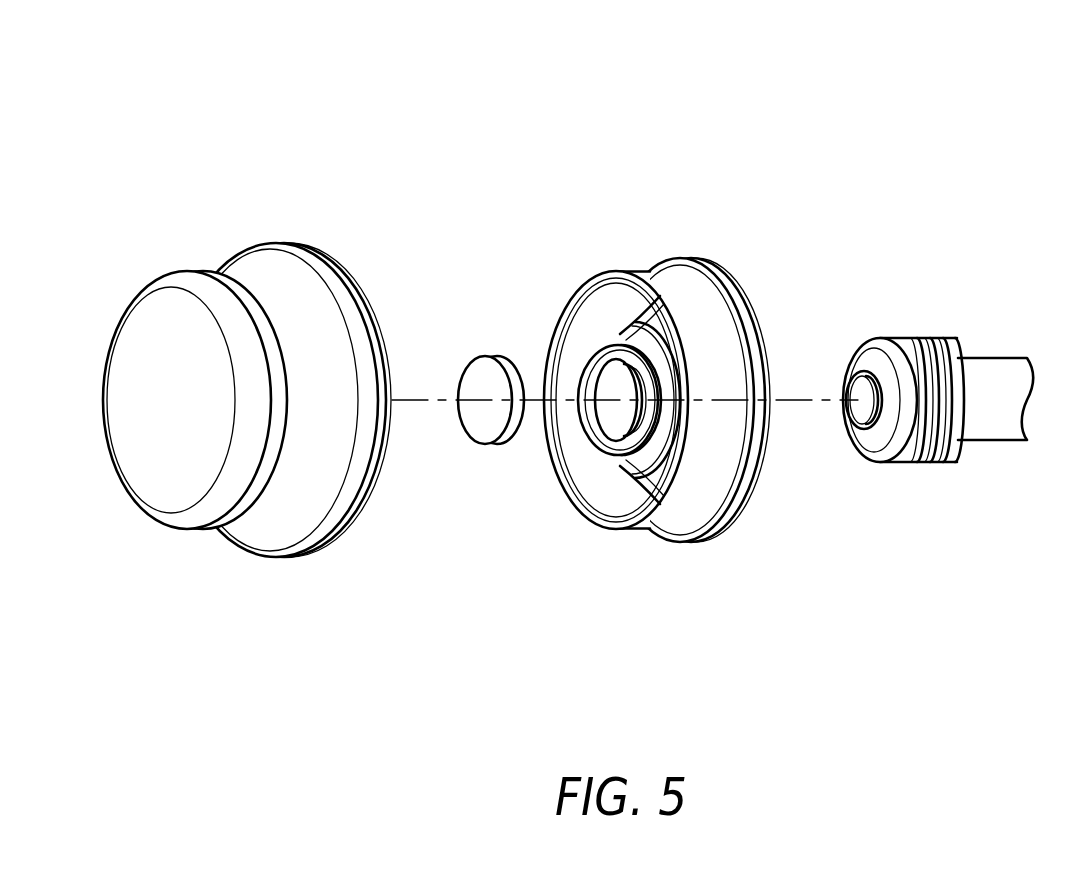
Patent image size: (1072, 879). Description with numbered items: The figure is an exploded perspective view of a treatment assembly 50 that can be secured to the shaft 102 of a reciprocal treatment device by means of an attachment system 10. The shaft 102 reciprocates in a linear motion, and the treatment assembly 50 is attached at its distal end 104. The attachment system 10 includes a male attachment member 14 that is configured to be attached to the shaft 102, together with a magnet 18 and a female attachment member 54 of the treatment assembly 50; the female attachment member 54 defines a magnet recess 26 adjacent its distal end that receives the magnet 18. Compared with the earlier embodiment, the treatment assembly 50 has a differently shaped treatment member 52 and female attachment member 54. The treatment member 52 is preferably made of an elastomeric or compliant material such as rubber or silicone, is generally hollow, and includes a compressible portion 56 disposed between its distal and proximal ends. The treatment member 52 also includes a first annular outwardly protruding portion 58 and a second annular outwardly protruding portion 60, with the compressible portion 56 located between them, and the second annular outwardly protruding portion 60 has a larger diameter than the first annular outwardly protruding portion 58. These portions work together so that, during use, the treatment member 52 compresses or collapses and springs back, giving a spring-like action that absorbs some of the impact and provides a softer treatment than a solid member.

The attachment system 10 is at (670, 125).
The male attachment member 14 is at (899, 357).
The magnet 18 is at (483, 428).
The magnet recess 26 is at (598, 430).
The treatment assembly 50 is at (621, 325).
The treatment member 52 is at (304, 192).
The female attachment member 54 is at (757, 232).
The compressible portion 56 is at (247, 378).
The first annular outwardly protruding portion 58 is at (278, 556).
The second annular outwardly protruding portion 60 is at (190, 270).
The shaft 102 is at (988, 358).
The distal end 104 is at (860, 415).